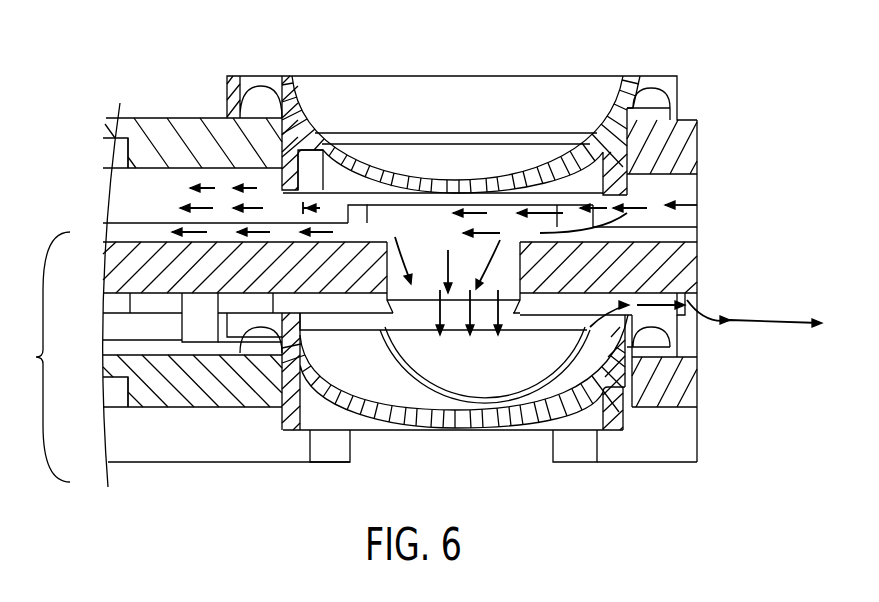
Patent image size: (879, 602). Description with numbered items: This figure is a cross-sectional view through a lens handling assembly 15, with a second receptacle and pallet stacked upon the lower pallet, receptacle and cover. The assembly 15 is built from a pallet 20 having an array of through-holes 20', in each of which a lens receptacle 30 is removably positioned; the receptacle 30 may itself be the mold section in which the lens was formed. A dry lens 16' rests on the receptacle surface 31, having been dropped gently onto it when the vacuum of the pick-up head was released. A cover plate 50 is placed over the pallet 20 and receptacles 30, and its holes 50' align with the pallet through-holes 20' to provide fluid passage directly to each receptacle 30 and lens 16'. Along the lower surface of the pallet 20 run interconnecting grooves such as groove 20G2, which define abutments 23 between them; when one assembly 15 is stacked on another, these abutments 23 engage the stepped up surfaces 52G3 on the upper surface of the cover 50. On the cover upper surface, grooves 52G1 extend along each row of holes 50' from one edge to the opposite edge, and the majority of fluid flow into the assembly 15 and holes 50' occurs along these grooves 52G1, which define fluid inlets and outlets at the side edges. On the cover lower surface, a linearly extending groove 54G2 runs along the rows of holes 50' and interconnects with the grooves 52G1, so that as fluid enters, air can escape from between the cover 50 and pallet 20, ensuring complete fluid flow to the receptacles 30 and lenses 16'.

The lens handling assembly 15 is at (41, 357).
The dry lens 16' is at (485, 365).
The pallet 20 is at (425, 292).
The through-hole 20' is at (422, 257).
The interconnecting groove 20G2 is at (178, 170).
The abutment 23 is at (347, 207).
The lens receptacle 30 is at (283, 105).
The receptacle surface 31 is at (510, 176).
The cover plate 50 is at (420, 267).
The hole 50' is at (453, 262).
The upper surface groove 52G1 is at (680, 257).
The stepped up surface 52G3 is at (367, 190).
The linearly extending groove 54G2 is at (660, 288).